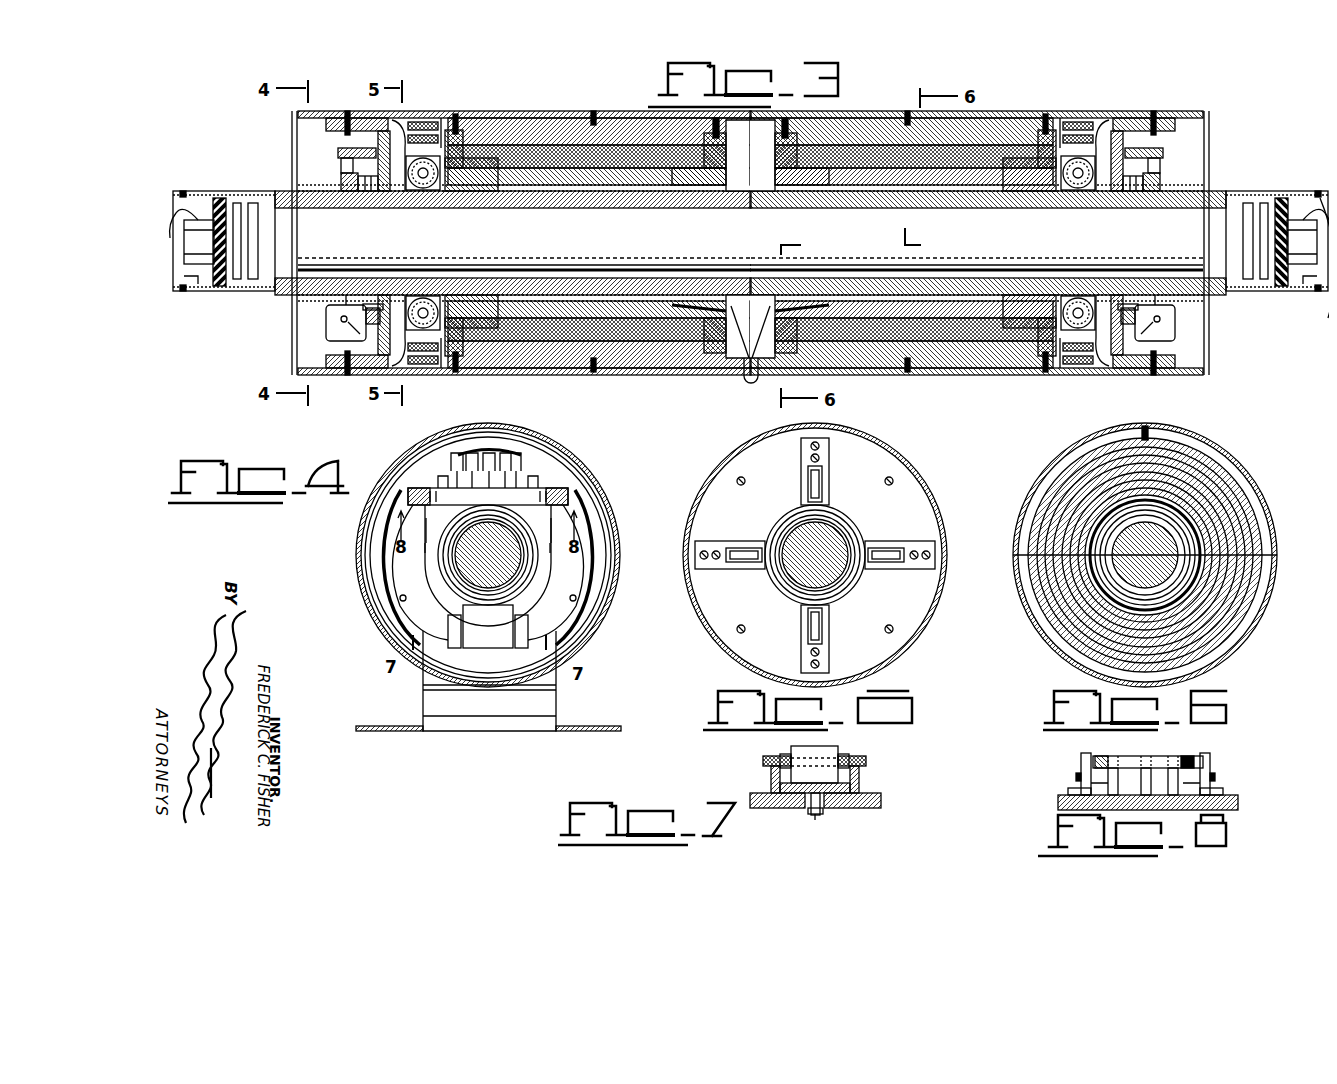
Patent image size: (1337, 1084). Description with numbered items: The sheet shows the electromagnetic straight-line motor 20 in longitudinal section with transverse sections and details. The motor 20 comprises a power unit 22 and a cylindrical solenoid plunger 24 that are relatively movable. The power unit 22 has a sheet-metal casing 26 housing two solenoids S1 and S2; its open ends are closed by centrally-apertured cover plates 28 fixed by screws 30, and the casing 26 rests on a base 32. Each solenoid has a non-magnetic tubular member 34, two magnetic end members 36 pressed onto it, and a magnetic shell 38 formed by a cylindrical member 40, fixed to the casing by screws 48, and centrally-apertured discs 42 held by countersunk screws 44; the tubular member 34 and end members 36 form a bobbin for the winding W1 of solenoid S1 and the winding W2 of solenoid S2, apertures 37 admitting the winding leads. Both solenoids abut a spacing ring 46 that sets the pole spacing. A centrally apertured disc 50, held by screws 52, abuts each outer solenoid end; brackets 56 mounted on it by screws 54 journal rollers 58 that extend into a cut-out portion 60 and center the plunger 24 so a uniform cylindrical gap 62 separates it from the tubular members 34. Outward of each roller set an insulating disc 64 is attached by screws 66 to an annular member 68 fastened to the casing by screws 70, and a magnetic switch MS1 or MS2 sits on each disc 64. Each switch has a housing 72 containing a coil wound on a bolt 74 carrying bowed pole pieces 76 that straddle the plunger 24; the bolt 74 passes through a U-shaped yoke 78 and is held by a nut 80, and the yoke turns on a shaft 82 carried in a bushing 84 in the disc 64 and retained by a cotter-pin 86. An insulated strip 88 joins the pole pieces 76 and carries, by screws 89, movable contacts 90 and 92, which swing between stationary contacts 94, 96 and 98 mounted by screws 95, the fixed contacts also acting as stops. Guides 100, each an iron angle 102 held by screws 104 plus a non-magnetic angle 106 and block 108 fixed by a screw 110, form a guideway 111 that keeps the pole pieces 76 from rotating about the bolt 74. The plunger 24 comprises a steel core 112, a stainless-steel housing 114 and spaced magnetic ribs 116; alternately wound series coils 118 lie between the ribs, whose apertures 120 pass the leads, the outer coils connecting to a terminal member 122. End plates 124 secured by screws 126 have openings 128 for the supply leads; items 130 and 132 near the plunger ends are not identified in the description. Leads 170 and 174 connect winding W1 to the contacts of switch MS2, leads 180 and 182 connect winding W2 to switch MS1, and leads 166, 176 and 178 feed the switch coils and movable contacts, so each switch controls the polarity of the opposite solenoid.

In FIG. 3, the electromagnetic straight-line motor 20 is at (245, 126).
In FIG. 4, the electromagnetic straight-line motor 20 is at (468, 577).
In FIG. 3, the power unit 22 is at (510, 103).
In FIG. 4, the power unit 22 is at (342, 571).
In FIG. 5, the power unit 22 is at (698, 461).
In FIG. 6, the power unit 22 is at (1038, 464).
In FIG. 3, the cylindrical electromagnetic solenoid plunger 24 is at (250, 283).
In FIG. 4, the cylindrical electromagnetic solenoid plunger 24 is at (478, 590).
In FIG. 5, the cylindrical electromagnetic solenoid plunger 24 is at (768, 578).
In FIG. 6, the cylindrical electromagnetic solenoid plunger 24 is at (1145, 555).
In FIG. 3, the cylindrical shell or casing 26 is at (545, 110).
In FIG. 4, the cylindrical shell or casing 26 is at (565, 462).
In FIG. 5, the cylindrical shell or casing 26 is at (690, 480).
In FIG. 6, the cylindrical shell or casing 26 is at (1075, 432).
In FIG. 3, the cover plates 28 is at (1201, 140).
In FIG. 3, the screws 30 is at (284, 106).
In FIG. 4, the base or mounting 32 is at (408, 702).
In FIG. 3, the tubular member 34 is at (640, 183).
In FIG. 6, the tubular member 34 is at (1105, 500).
In FIG. 3, the end members 36 is at (768, 160).
In FIG. 6, the end members 36 is at (1080, 640).
In FIG. 3, the apertures 37 is at (748, 303).
In FIG. 6, the apertures 37 is at (1105, 655).
In FIG. 3, the shell 38 is at (592, 140).
In FIG. 6, the shell 38 is at (1165, 440).
In FIG. 3, the cylindrical member 40 is at (620, 120).
In FIG. 6, the cylindrical member 40 is at (1225, 462).
In FIG. 3, the centrally-apertured discs 42 is at (450, 124).
In FIG. 6, the centrally-apertured discs 42 is at (1060, 630).
In FIG. 3, the countersunk screws 44 is at (448, 106).
In FIG. 3, the annular member or spacing ring 46 is at (746, 116).
In FIG. 3, the screws 48 is at (586, 103).
In FIG. 6, the screws 48 is at (1140, 420).
In FIG. 3, the centrally apertured disc 50 is at (1060, 352).
In FIG. 5, the centrally apertured disc 50 is at (695, 512).
In FIG. 5, the screws 52 is at (737, 472).
In FIG. 6, the screws 52 is at (1195, 470).
In FIG. 3, the screws 54 is at (430, 112).
In FIG. 5, the screws 54 is at (700, 540).
In FIG. 3, the brackets 56 is at (418, 114).
In FIG. 5, the brackets 56 is at (820, 470).
In FIG. 3, the rollers 58 is at (415, 180).
In FIG. 5, the rollers 58 is at (814, 480).
In FIG. 3, the cut-out portion 60 is at (437, 180).
In FIG. 3, the cylindrical gap 62 is at (672, 184).
In FIG. 6, the cylindrical gap 62 is at (1190, 520).
In FIG. 3, the centrally apertured disc 64 is at (376, 184).
In FIG. 4, the centrally apertured disc 64 is at (580, 530).
In FIG. 7, the centrally apertured disc 64 is at (873, 793).
In FIG. 8, the centrally apertured disc 64 is at (1052, 798).
In FIG. 3, the screws 66 is at (388, 112).
In FIG. 3, the annular member 68 is at (330, 110).
In FIG. 4, the annular member 68 is at (598, 562).
In FIG. 3, the screws 70 is at (339, 103).
In FIG. 3, the housing 72 is at (318, 328).
In FIG. 4, the housing 72 is at (518, 615).
In FIG. 7, the housing 72 is at (815, 745).
In FIG. 3, the bolt 74 is at (751, 333).
In FIG. 4, the bolt 74 is at (440, 625).
In FIG. 7, the bolt 74 is at (755, 753).
In FIG. 3, the pole pieces 76 is at (330, 292).
In FIG. 4, the pole pieces 76 is at (420, 550).
In FIG. 7, the pole pieces 76 is at (777, 748).
In FIG. 8, the pole pieces 76 is at (1094, 748).
In FIG. 3, the U-shaped yoke 78 is at (360, 287).
In FIG. 4, the U-shaped yoke 78 is at (462, 628).
In FIG. 7, the U-shaped yoke 78 is at (851, 772).
In FIG. 4, the nut 80 is at (420, 647).
In FIG. 7, the nut 80 is at (763, 760).
In FIG. 3, the shaft or pivot 82 is at (372, 290).
In FIG. 7, the shaft or pivot 82 is at (800, 795).
In FIG. 3, the bushing 84 is at (396, 290).
In FIG. 7, the bushing 84 is at (812, 798).
In FIG. 3, the cotter-pin 86 is at (412, 287).
In FIG. 7, the cotter-pin 86 is at (807, 810).
In FIG. 3, the insulated strip 88 is at (1150, 170).
In FIG. 4, the insulated strip 88 is at (488, 445).
In FIG. 8, the insulated strip 88 is at (1160, 748).
In FIG. 3, the screws 89 is at (1150, 160).
In FIG. 4, the screws 89 is at (525, 470).
In FIG. 4, the movable switch contact 90 is at (440, 470).
In FIG. 8, the movable switch contact 90 is at (1122, 748).
In FIG. 4, the movable switch contact 92 is at (500, 445).
In FIG. 8, the movable switch contact 92 is at (1155, 748).
In FIG. 4, the stationary contact 94 is at (458, 445).
In FIG. 8, the stationary contact 94 is at (1108, 787).
In FIG. 3, the screws 95 is at (1128, 130).
In FIG. 4, the screws 95 is at (445, 470).
In FIG. 3, the stationary contact 96 is at (1160, 145).
In FIG. 4, the stationary contact 96 is at (482, 445).
In FIG. 8, the stationary contact 96 is at (1140, 787).
In FIG. 4, the stationary contact 98 is at (510, 447).
In FIG. 8, the stationary contact 98 is at (1167, 787).
In FIG. 8, the guides 100 is at (1068, 763).
In FIG. 4, the iron angle 102 is at (558, 487).
In FIG. 8, the iron angle 102 is at (1083, 777).
In FIG. 4, the screws 104 is at (560, 494).
In FIG. 8, the screws 104 is at (1060, 785).
In FIG. 3, the angle 106 is at (1160, 180).
In FIG. 4, the angle 106 is at (555, 480).
In FIG. 8, the angle 106 is at (1078, 746).
In FIG. 3, the block 108 is at (340, 184).
In FIG. 4, the screw 110 is at (410, 485).
In FIG. 8, the screw 110 is at (1068, 769).
In FIG. 8, the guideway 111 is at (1070, 747).
In FIG. 3, the cylindrical core 112 is at (245, 195).
In FIG. 5, the cylindrical core 112 is at (835, 528).
In FIG. 6, the cylindrical core 112 is at (1195, 535).
In FIG. 3, the cylindrical housing 114 is at (756, 185).
In FIG. 5, the cylindrical housing 114 is at (838, 535).
In FIG. 6, the cylindrical housing 114 is at (1200, 545).
In FIG. 3, the ribs or washers 116 is at (250, 205).
In FIG. 6, the ribs or washers 116 is at (1100, 535).
In FIG. 3, the coil 118 is at (300, 200).
In FIG. 5, the coil 118 is at (836, 512).
In FIG. 6, the coil 118 is at (1195, 560).
In FIG. 3, the aperture 120 is at (690, 195).
In FIG. 6, the aperture 120 is at (1150, 495).
In FIG. 3, the terminal member 122 is at (211, 190).
In FIG. 3, the plate 124 is at (175, 283).
In FIG. 3, the screws 126 is at (175, 183).
In FIG. 3, the opening 128 is at (190, 272).
In FIG. 3, the lead wire 130 is at (1322, 298).
In FIG. 3, the lead wire 132 is at (175, 215).
In FIG. 3, the lead 166 is at (1095, 367).
In FIG. 3, the lead 170 is at (730, 372).
In FIG. 3, the lead 174 is at (728, 318).
In FIG. 3, the lead 176 is at (400, 370).
In FIG. 4, the lead 176 is at (418, 415).
In FIG. 4, the lead 178 is at (585, 552).
In FIG. 3, the lead 180 is at (748, 372).
In FIG. 4, the lead 180 is at (475, 430).
In FIG. 3, the lead 182 is at (755, 330).
In FIG. 4, the lead 182 is at (495, 445).
In FIG. 3, the solenoid S1 is at (600, 158).
In FIG. 3, the solenoid S2 is at (862, 140).
In FIG. 3, the winding W1 is at (548, 177).
In FIG. 3, the winding W2 is at (865, 177).
In FIG. 6, the winding W2 is at (1200, 530).
In FIG. 3, the magnetic switch MS1 is at (306, 325).
In FIG. 4, the magnetic switch MS1 is at (478, 660).
In FIG. 3, the magnetic switch MS2 is at (1180, 322).